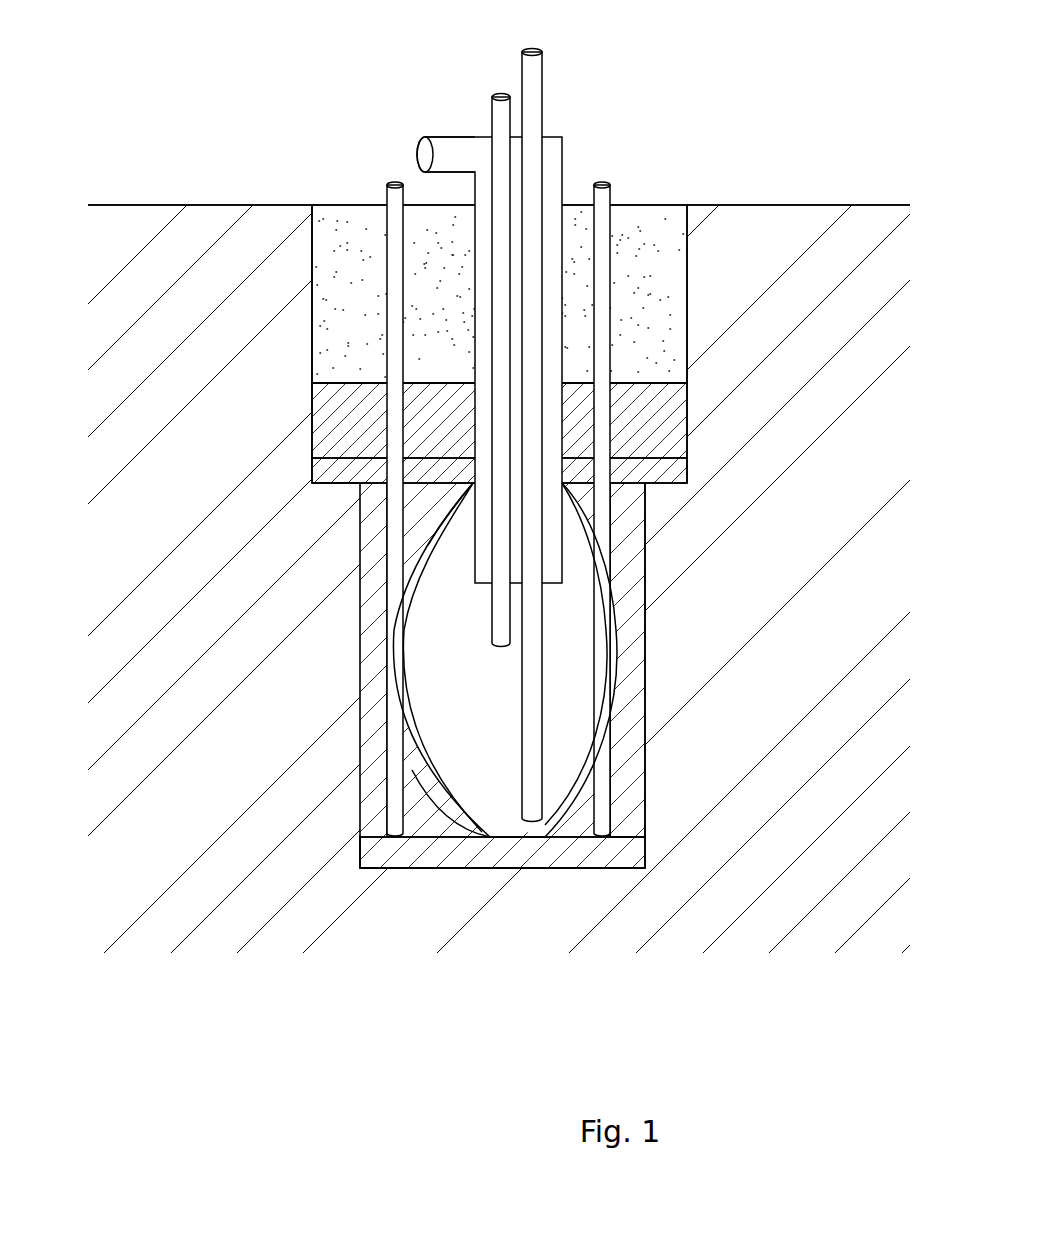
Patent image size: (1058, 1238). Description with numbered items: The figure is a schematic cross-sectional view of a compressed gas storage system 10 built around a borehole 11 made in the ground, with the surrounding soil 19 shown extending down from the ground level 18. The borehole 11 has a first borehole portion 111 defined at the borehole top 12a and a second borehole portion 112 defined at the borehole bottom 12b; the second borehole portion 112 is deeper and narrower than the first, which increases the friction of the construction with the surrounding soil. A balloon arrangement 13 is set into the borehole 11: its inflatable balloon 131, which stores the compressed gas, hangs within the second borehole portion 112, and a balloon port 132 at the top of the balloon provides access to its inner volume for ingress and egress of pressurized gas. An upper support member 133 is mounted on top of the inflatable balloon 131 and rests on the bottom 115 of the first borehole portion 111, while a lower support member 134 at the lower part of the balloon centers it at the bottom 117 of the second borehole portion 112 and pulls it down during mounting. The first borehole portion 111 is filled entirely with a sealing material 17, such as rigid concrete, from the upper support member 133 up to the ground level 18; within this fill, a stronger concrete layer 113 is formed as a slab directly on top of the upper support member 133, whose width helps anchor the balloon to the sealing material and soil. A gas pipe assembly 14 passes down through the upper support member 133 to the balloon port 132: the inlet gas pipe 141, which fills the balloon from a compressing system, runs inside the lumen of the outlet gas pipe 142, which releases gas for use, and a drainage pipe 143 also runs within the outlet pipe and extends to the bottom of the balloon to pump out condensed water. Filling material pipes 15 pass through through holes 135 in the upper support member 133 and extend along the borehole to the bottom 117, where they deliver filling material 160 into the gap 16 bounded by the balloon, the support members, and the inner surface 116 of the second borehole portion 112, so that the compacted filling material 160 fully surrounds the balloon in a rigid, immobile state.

The compressed gas storage system 10 is at (503, 505).
The borehole 11 is at (503, 599).
The first borehole portion 111 is at (503, 370).
The second borehole portion 112 is at (498, 738).
The layer of concrete material 113 is at (353, 427).
The bottom of the first borehole portion 115 is at (338, 483).
The inner surface of the second borehole portion 116 is at (636, 696).
The bottom of the second borehole portion 117 is at (478, 870).
The borehole top 12a is at (676, 192).
The borehole bottom 12b is at (596, 880).
The balloon arrangement 13 is at (433, 660).
The inflatable balloon 131 is at (455, 779).
The balloon port 132 is at (470, 495).
The upper support member 133 is at (327, 472).
The lower support member 134 is at (358, 857).
The through holes 135 is at (405, 382).
The gas pipe assembly 14 is at (509, 419).
The inlet gas pipe 141 is at (490, 124).
The outlet gas pipe 142 is at (445, 137).
The drainage pipe 143 is at (543, 67).
The filling material pipes 15 is at (388, 196).
The gap 16 is at (629, 625).
The filling material 160 is at (625, 774).
The sealing material 17 is at (665, 297).
The ground level 18 is at (800, 205).
The soil 19 is at (263, 225).